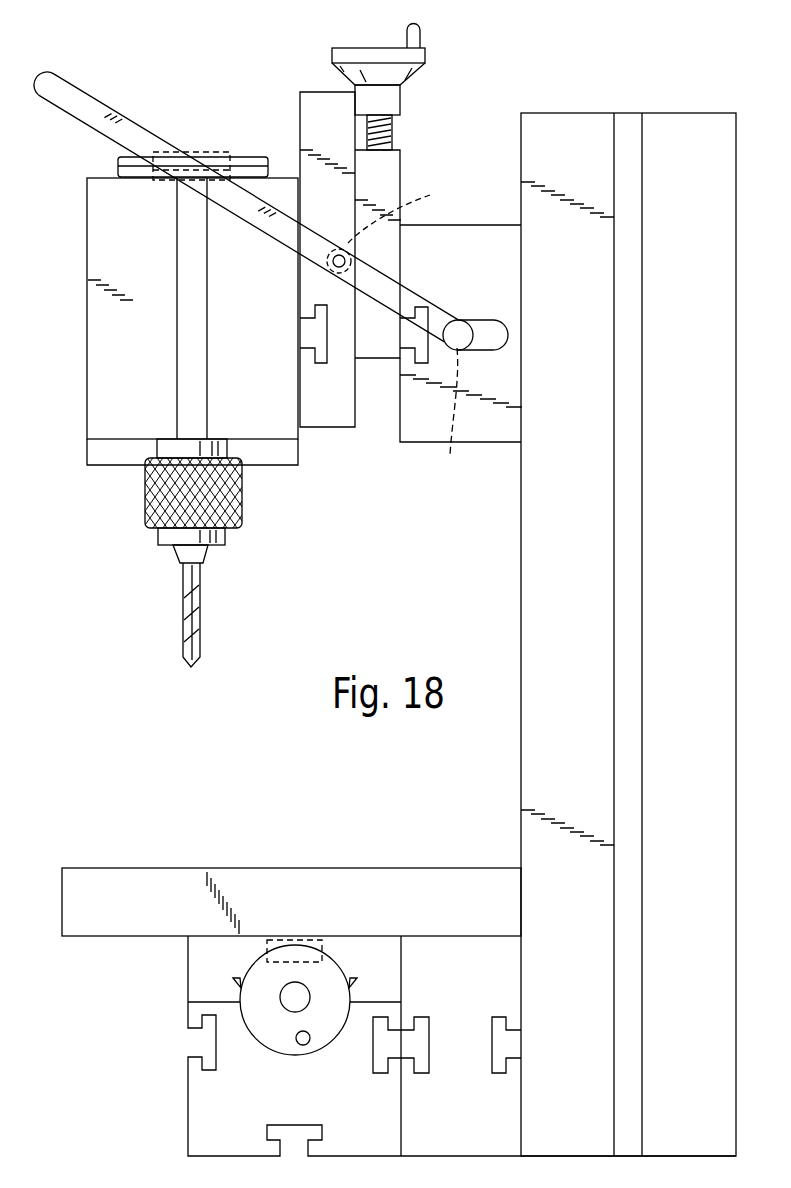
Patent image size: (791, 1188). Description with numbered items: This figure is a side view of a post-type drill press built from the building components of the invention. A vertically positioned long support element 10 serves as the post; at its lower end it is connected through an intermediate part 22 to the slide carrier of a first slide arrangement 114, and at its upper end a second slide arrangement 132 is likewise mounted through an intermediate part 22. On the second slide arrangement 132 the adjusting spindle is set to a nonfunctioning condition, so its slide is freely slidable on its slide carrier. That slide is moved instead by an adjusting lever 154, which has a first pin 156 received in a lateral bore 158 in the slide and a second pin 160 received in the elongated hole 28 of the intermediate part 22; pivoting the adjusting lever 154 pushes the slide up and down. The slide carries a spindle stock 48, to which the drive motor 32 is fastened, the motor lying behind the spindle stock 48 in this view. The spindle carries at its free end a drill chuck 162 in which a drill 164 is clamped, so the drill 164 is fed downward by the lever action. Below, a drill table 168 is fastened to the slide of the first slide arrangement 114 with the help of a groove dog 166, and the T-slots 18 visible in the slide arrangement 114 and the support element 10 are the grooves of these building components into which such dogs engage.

The long support element 10 is at (553, 588).
The T-slot 18 is at (206, 1037).
The intermediate part 22 is at (418, 415).
The elongated hole 28 is at (485, 340).
The drive motor 32 is at (276, 456).
The spindle stock 48 is at (122, 420).
The first slide arrangement 114 is at (188, 1097).
The second slide arrangement 132 is at (404, 160).
The adjusting lever 154 is at (137, 136).
The first pin 156 is at (402, 207).
The lateral bore 158 is at (328, 252).
The second pin 160 is at (435, 415).
The drill chuck 162 is at (222, 512).
The drill 164 is at (188, 600).
The groove dog 166 is at (303, 935).
The drill table 168 is at (140, 880).